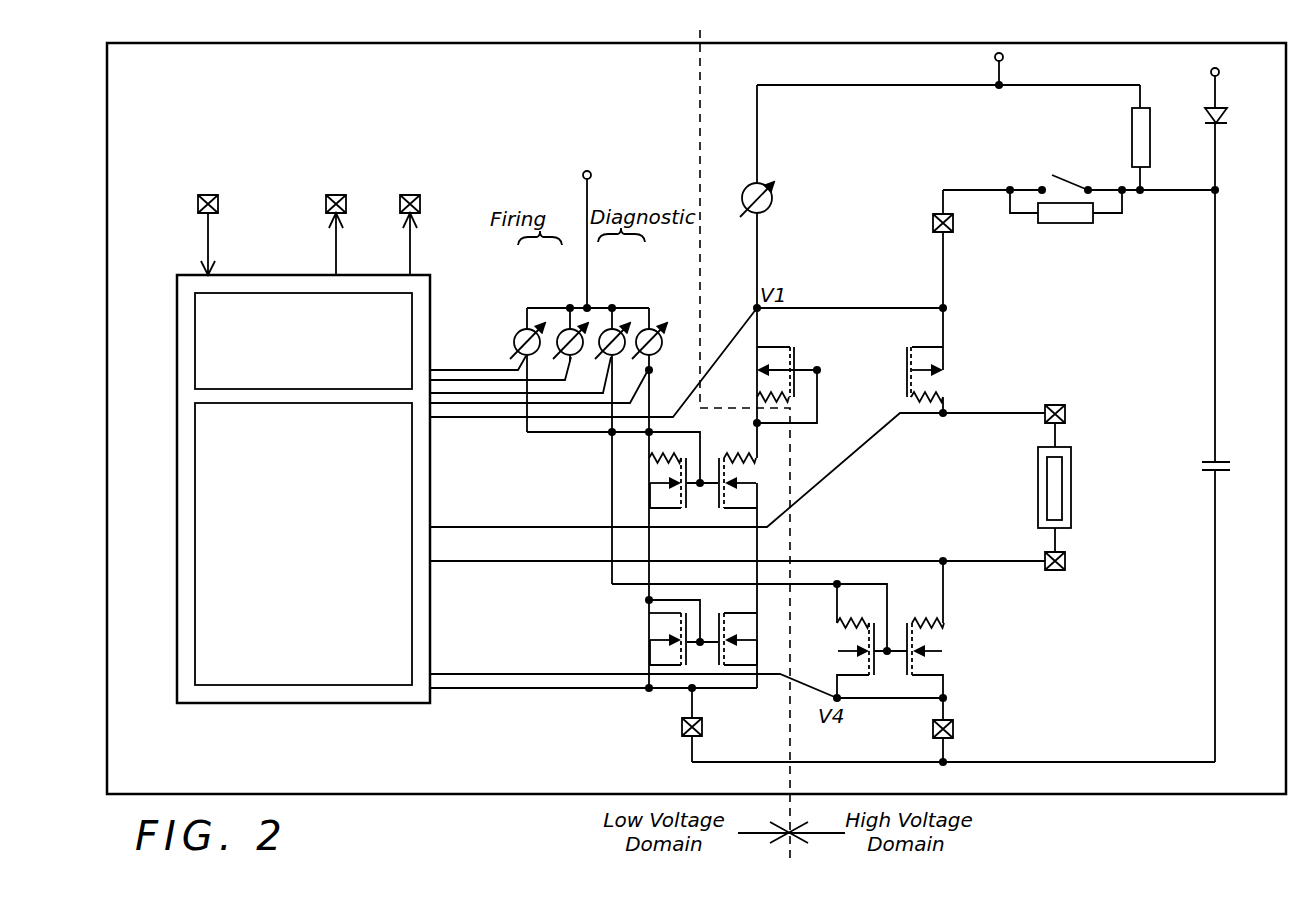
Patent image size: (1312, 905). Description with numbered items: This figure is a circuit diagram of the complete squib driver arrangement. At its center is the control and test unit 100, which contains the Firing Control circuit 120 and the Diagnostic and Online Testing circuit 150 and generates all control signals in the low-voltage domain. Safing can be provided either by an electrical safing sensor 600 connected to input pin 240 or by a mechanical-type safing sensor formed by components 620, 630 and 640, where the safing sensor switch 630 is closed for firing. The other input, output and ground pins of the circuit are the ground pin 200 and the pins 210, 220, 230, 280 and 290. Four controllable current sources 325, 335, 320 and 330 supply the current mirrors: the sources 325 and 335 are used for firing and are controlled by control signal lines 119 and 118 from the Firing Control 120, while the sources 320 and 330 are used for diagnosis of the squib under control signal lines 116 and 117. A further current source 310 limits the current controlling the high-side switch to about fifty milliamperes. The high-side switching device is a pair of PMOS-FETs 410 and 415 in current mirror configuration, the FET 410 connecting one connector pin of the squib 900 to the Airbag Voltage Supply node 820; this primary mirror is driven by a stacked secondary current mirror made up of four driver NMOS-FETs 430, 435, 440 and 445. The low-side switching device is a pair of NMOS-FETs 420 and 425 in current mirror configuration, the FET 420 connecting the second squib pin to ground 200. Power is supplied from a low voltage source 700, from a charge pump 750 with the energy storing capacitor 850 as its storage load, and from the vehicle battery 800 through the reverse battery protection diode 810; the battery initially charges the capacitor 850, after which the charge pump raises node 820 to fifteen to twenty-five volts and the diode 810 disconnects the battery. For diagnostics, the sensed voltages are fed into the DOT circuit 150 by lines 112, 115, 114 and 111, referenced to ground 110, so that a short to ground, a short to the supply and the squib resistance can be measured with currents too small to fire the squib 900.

The control and test unit 100 is at (177, 680).
The ground reference line 110 is at (483, 690).
The voltage sensing line 111 is at (480, 672).
The voltage sensing line 112 is at (448, 419).
The voltage sensing line 114 is at (470, 562).
The voltage sensing line 115 is at (485, 526).
The control signal line 116 is at (512, 405).
The control signal line 117 is at (489, 391).
The firing control signal line 118 is at (469, 378).
The firing control signal line 119 is at (443, 368).
The Firing Control circuit 120 is at (385, 355).
The Diagnostic and Online Testing circuit 150 is at (385, 533).
The ground pin 200 is at (933, 731).
The circuit pin 210 is at (681, 728).
The circuit pin 220 is at (335, 195).
The circuit pin 230 is at (410, 195).
The input pin 240 is at (219, 204).
The circuit pin 280 is at (1065, 563).
The circuit pin 290 is at (1068, 415).
The current source I5 310 is at (742, 199).
The current source I3 320 is at (597, 318).
The current source I1 325 is at (510, 318).
The current source I4 330 is at (645, 304).
The current source I2 335 is at (552, 304).
The high-side driver PMOS-FET P1 410 is at (937, 384).
The high-side driver PMOS-FET P2 415 is at (772, 344).
The low-side driver NMOS-FET N1 420 is at (937, 637).
The low-side driver NMOS-FET N2 425 is at (842, 642).
The driver NMOS-FET N5 430 is at (746, 510).
The driver NMOS-FET N6 435 is at (656, 510).
The driver NMOS-FET N3 440 is at (713, 667).
The driver NMOS-FET N4 445 is at (637, 657).
The electrical safing sensor 600 is at (164, 158).
The mechanical safing sensor component 620 is at (1130, 157).
The safing sensor switch 630 is at (1050, 171).
The mechanical safing sensor component 640 is at (1065, 226).
The low voltage source input 700 is at (583, 177).
The charge pump input 750 is at (1003, 57).
The vehicle battery connector 800 is at (1208, 74).
The reverse battery protection diode 810 is at (1237, 135).
The Airbag Voltage Supply node 820 is at (933, 226).
The energy storing capacitor Cstore 850 is at (1205, 476).
The squib 900 is at (1072, 475).